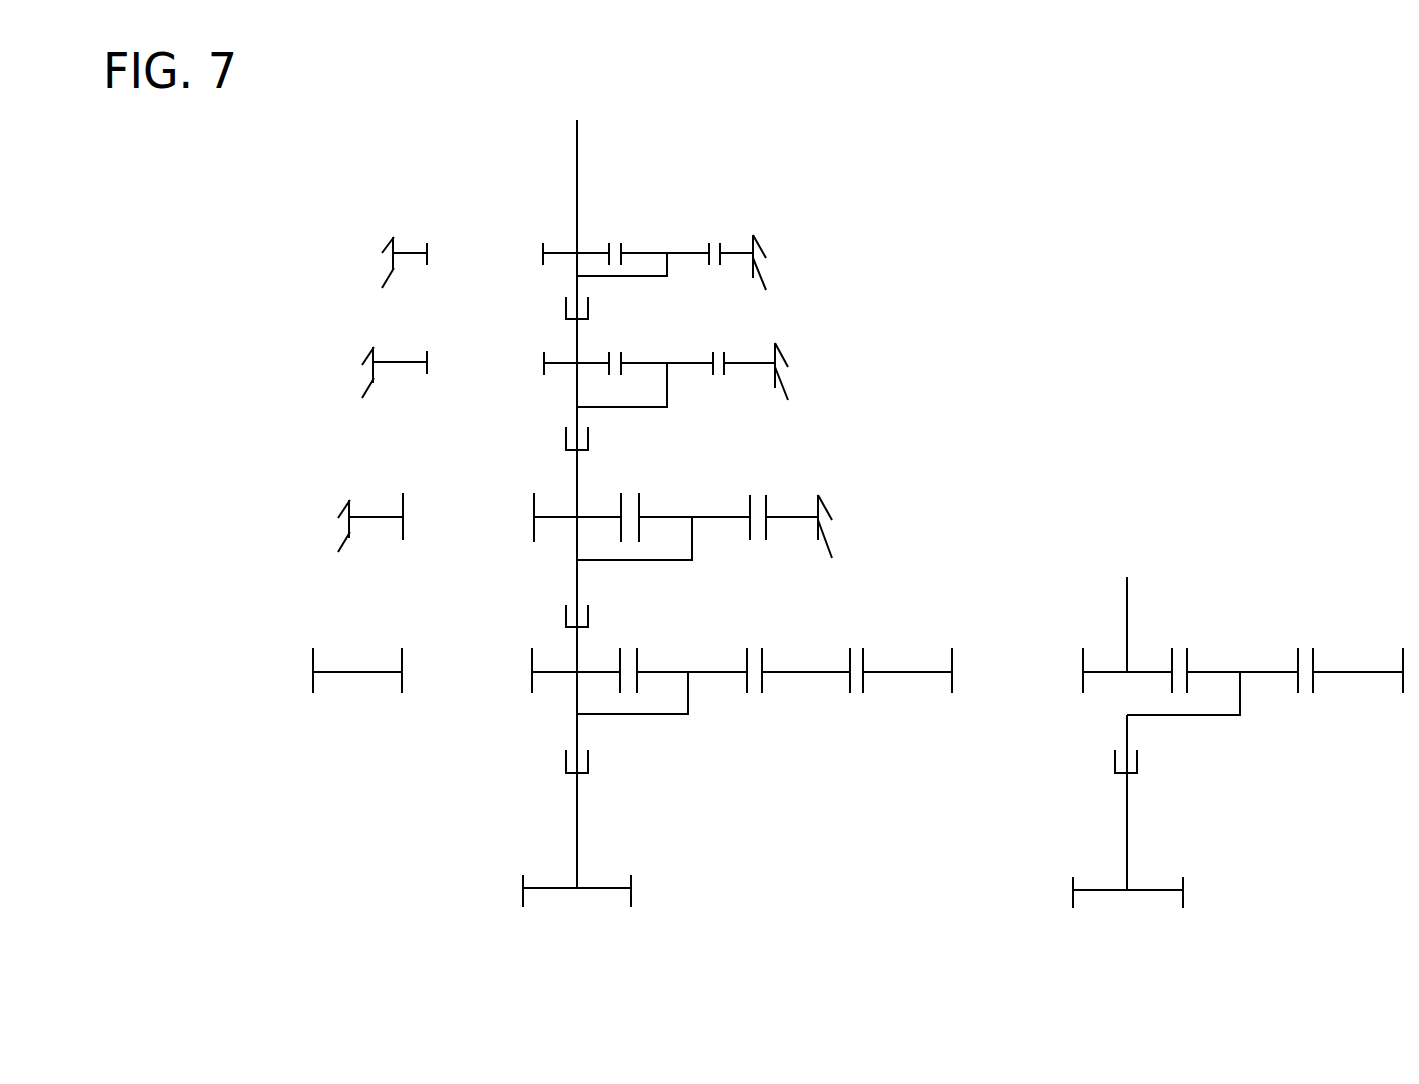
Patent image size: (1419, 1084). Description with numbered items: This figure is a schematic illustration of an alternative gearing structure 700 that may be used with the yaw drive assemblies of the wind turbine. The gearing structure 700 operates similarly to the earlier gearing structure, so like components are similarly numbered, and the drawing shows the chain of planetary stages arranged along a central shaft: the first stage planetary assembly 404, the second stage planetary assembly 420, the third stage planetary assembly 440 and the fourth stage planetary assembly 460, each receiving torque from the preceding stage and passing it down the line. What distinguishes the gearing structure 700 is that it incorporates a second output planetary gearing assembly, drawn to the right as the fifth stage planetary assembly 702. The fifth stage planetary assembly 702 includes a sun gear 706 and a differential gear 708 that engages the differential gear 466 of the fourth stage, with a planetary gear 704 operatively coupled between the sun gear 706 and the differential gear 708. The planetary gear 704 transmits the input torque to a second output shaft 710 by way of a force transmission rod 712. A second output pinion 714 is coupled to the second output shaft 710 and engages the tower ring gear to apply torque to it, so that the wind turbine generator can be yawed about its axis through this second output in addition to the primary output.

The gearing structure 700 is at (751, 508).
The fifth stage planetary assembly 702 is at (1212, 711).
The first stage planetary assembly 404 is at (362, 267).
The second stage planetary assembly 420 is at (330, 357).
The third stage planetary assembly 440 is at (312, 513).
The fourth stage planetary assembly 460 is at (265, 650).
The differential gear 466 is at (812, 675).
The differential gear 708 is at (907, 675).
The planetary gear 704 is at (1217, 669).
The sun gear 706 is at (1106, 669).
The second output shaft 710 is at (1128, 822).
The force transmission rod 712 is at (1223, 715).
The second output pinion 714 is at (1157, 890).